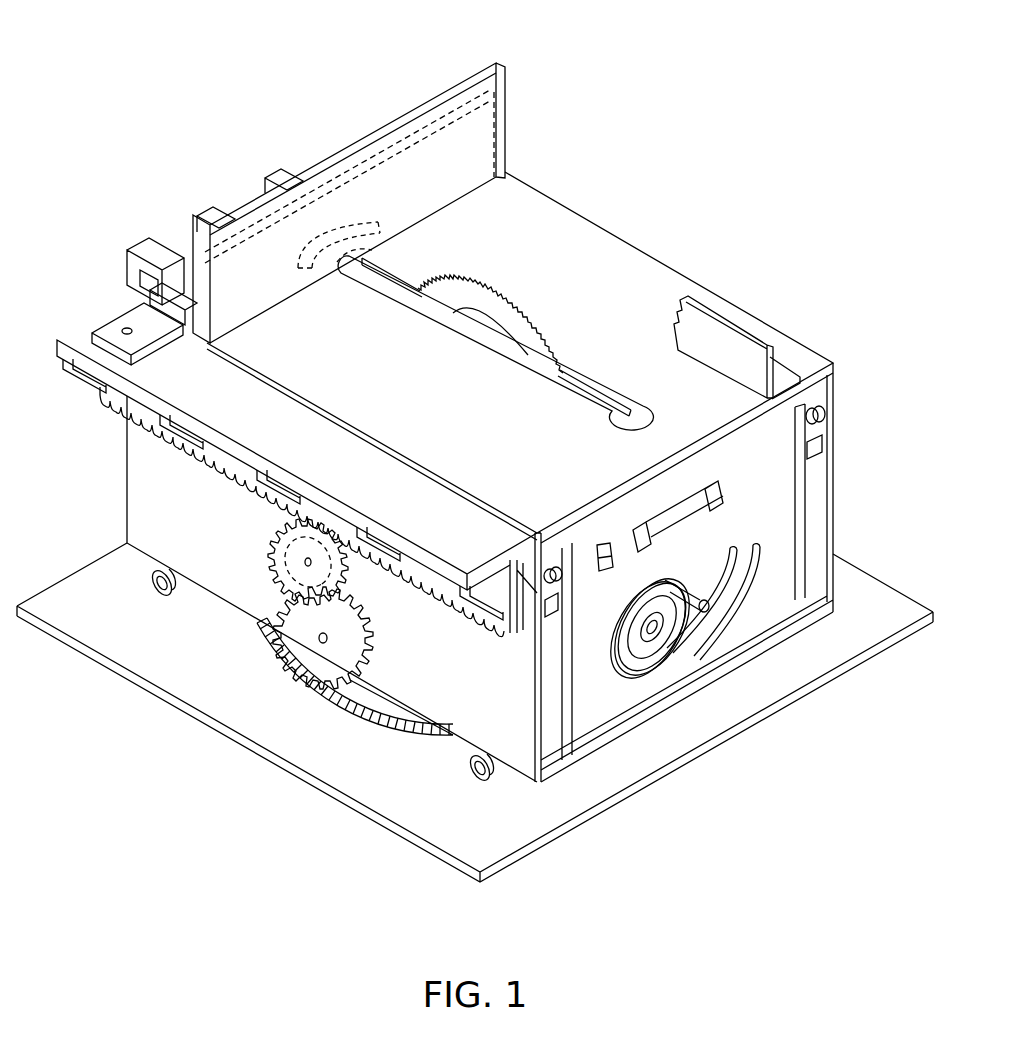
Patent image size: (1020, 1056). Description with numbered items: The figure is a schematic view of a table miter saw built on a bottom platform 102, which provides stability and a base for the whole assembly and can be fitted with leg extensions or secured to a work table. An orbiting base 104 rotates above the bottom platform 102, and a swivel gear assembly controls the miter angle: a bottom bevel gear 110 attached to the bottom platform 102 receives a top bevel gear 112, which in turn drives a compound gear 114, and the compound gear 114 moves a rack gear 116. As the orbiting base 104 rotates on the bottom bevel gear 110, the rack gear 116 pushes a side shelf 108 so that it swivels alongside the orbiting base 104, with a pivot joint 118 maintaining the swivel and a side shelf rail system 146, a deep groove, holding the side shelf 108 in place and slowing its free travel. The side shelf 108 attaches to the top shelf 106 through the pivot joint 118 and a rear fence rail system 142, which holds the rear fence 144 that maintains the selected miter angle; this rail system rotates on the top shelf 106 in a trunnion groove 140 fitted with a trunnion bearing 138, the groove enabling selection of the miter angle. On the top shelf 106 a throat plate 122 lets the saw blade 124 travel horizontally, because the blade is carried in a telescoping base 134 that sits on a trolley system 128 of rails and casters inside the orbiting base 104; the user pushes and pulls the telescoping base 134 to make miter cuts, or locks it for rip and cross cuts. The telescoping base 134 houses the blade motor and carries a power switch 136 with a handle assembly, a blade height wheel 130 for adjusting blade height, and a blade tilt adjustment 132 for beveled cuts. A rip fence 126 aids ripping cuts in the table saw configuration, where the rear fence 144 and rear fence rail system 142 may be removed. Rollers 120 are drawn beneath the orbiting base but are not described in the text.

The bottom platform 102 is at (461, 842).
The orbiting base 104 is at (471, 697).
The top shelf 106 is at (409, 409).
The side shelf 108 is at (318, 472).
The bottom bevel gear 110 is at (353, 708).
The top bevel gear 112 is at (283, 612).
The compound gear 114 is at (283, 560).
The rack gear 116 is at (140, 420).
The pivot joint 118 is at (127, 330).
The rollers 120 is at (153, 584).
The throat plate 122 is at (400, 263).
The saw blade 124 is at (527, 331).
The rip fence 126 is at (745, 354).
The trolley system 128 is at (553, 577).
The blade height wheel 130 is at (614, 656).
The blade tilt adjustment 132 is at (737, 613).
The telescoping base 134 is at (746, 489).
The power switch 136 is at (596, 552).
The trunnion bearing 138 is at (249, 292).
The trunnion groove 140 is at (323, 230).
The rear fence rail system 142 is at (130, 253).
The rear fence 144 is at (333, 173).
The side shelf rail system 146 is at (530, 600).